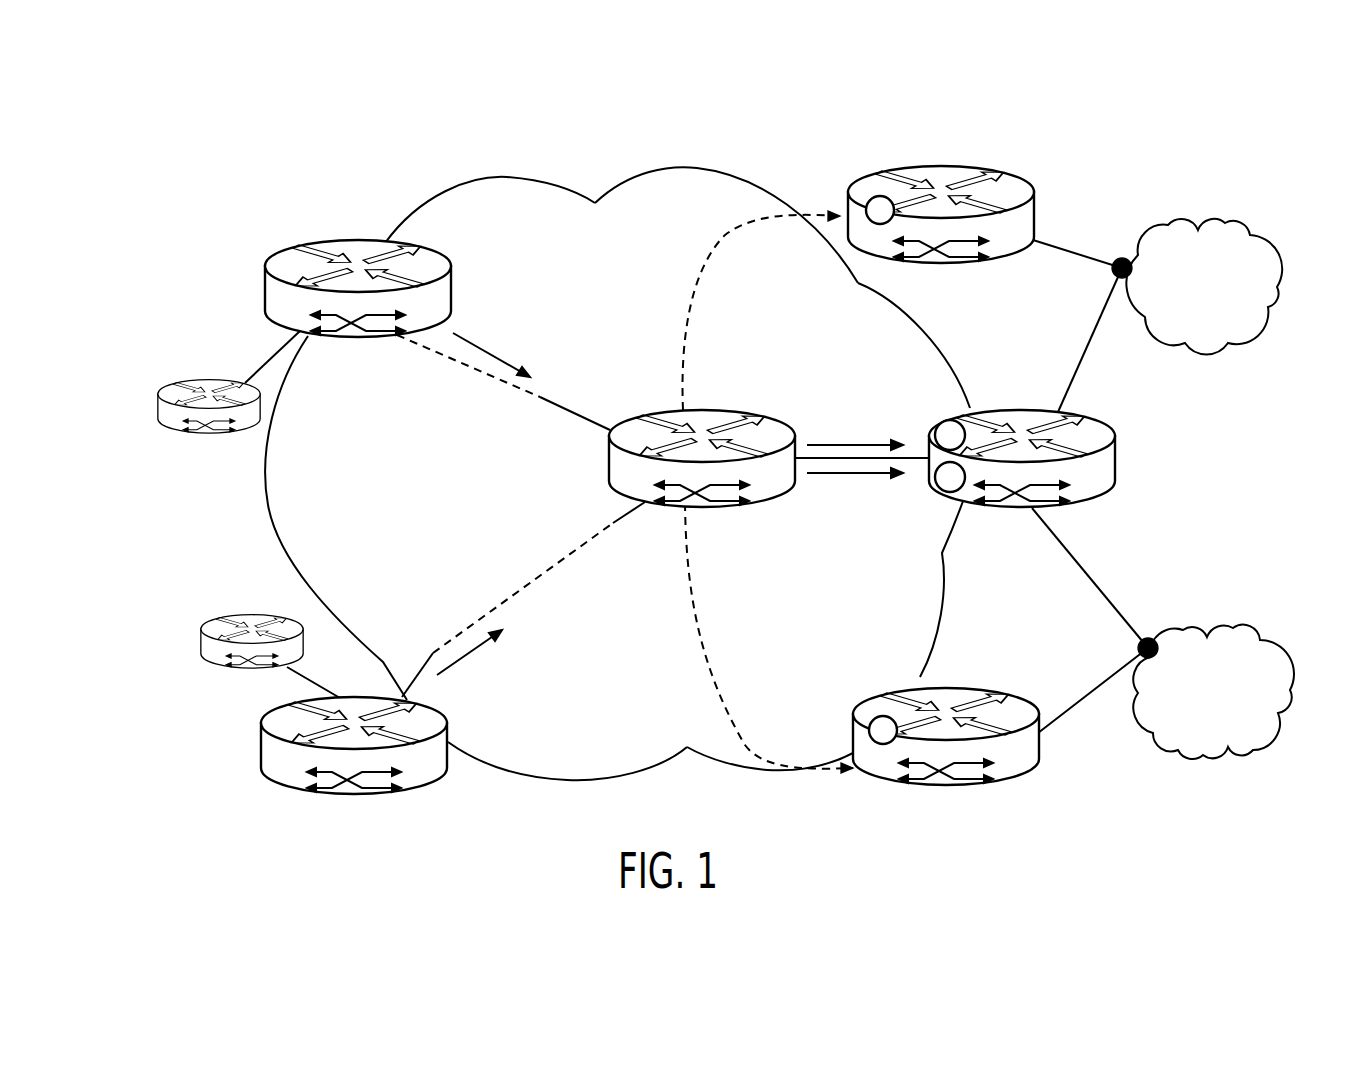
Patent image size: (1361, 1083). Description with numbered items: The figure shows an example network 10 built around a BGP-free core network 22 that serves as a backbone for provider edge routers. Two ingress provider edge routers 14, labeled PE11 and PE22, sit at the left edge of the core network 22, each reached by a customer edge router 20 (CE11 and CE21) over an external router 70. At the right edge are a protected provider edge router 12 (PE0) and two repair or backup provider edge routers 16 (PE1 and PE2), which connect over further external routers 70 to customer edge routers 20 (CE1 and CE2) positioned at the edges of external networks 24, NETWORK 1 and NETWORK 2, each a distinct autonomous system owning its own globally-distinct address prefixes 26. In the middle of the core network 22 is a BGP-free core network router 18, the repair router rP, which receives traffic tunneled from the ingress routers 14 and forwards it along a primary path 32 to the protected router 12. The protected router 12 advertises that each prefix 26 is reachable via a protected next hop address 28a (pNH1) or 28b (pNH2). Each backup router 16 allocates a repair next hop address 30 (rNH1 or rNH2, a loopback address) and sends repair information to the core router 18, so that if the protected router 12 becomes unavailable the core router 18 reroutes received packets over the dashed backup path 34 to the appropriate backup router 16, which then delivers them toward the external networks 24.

The network 10 is at (488, 150).
The protected provider edge router 12 is at (1104, 495).
The ingress provider edge router 14 is at (294, 250).
The repair provider edge router 16 is at (1034, 187).
The BGP-free core network router 18 is at (752, 503).
The customer edge router 20 is at (205, 434).
The BGP-free core network 22 is at (418, 502).
The external network 24 is at (1250, 240).
The address prefix 26 is at (1208, 380).
The protected next hop address pNH1 28a is at (938, 420).
The protected next hop address pNH2 28b is at (942, 490).
The repair next hop address 30 is at (875, 193).
The primary path 32 is at (822, 440).
The backup path 34 is at (692, 320).
The external router 70 is at (250, 349).